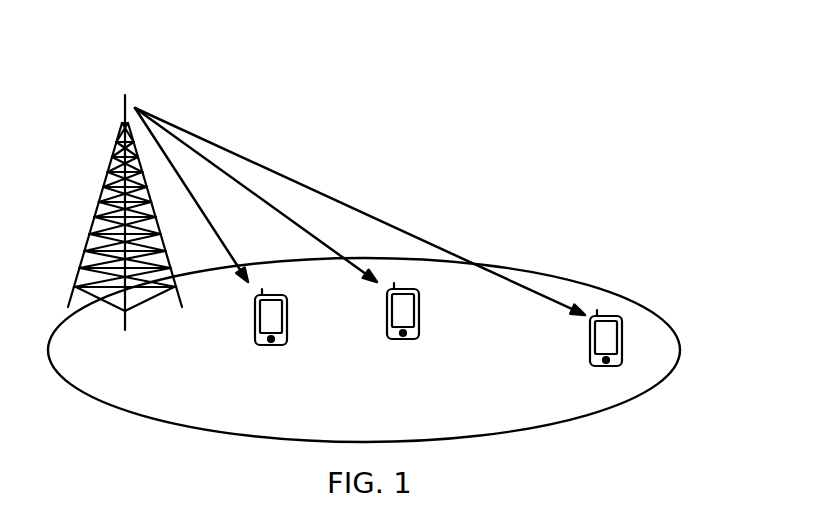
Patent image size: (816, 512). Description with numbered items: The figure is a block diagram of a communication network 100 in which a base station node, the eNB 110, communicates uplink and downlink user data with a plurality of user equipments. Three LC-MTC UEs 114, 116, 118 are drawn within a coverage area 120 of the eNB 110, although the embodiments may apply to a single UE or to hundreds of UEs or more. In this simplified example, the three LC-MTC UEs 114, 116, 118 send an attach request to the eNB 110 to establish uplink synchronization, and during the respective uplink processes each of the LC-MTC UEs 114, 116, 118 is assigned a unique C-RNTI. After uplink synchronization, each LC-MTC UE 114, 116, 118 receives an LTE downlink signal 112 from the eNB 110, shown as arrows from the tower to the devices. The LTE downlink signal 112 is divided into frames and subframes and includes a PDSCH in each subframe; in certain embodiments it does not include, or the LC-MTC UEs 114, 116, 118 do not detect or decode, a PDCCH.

The communication network 100 is at (172, 45).
The eNB 110 is at (110, 190).
The LTE downlink signal 112 is at (246, 140).
The LC-MTC UE 114 is at (288, 306).
The LC-MTC UE 116 is at (420, 300).
The LC-MTC UE 118 is at (620, 322).
The coverage area 120 is at (132, 413).